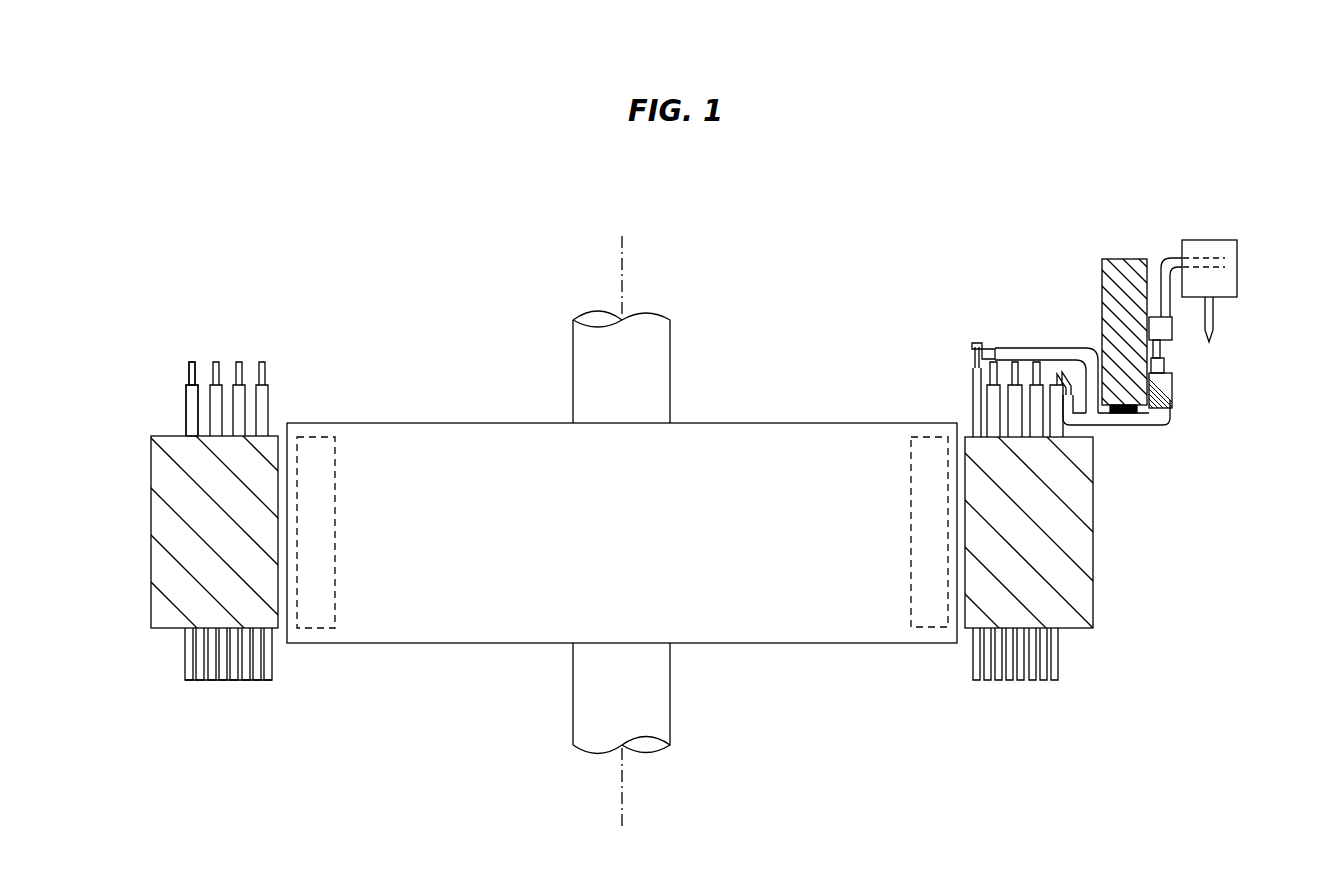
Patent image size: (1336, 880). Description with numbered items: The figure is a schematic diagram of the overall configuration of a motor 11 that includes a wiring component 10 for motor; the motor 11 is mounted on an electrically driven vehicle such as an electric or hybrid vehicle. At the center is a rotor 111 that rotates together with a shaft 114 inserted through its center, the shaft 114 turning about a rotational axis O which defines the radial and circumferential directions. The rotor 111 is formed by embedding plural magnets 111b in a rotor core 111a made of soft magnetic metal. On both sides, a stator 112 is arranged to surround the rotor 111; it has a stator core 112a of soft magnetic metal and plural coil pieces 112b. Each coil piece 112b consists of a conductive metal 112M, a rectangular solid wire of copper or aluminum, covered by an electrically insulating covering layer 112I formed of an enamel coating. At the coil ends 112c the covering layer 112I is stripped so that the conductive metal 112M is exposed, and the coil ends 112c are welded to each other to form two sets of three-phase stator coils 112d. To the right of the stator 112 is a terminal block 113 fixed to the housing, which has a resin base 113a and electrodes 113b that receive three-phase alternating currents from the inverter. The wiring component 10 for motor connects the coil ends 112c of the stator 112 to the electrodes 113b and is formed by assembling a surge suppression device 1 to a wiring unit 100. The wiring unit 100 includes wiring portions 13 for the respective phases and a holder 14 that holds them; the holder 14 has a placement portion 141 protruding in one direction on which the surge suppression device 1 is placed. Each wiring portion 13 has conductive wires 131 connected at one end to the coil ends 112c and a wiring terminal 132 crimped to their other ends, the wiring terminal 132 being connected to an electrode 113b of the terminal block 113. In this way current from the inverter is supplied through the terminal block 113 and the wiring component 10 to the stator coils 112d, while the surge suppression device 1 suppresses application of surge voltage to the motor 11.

The motor 11 is at (212, 228).
The rotational axis O is at (621, 520).
The shaft 114 is at (672, 360).
The rotor 111 is at (857, 405).
The rotor core 111a is at (457, 422).
The magnets 111b is at (318, 432).
The stator 112 is at (143, 358).
The stator core 112a is at (1095, 543).
The coil pieces 112b is at (203, 681).
The coil ends 112c is at (262, 362).
The stator coils 112d is at (180, 672).
The conductive metal 112M is at (195, 362).
The covering layer 112I is at (188, 417).
The wiring component for motor 10 is at (1052, 246).
The surge suppression device 1 is at (1103, 303).
The wiring portions 13 is at (1157, 422).
The placement portion 141 is at (1115, 414).
The wiring unit 100 is at (1183, 390).
The holder 14 is at (1172, 395).
The conductive wires 131 is at (1165, 347).
The wiring terminal 132 is at (1197, 255).
The terminal block 113 is at (1250, 236).
The base 113a is at (1220, 240).
The electrodes 113b is at (1213, 318).